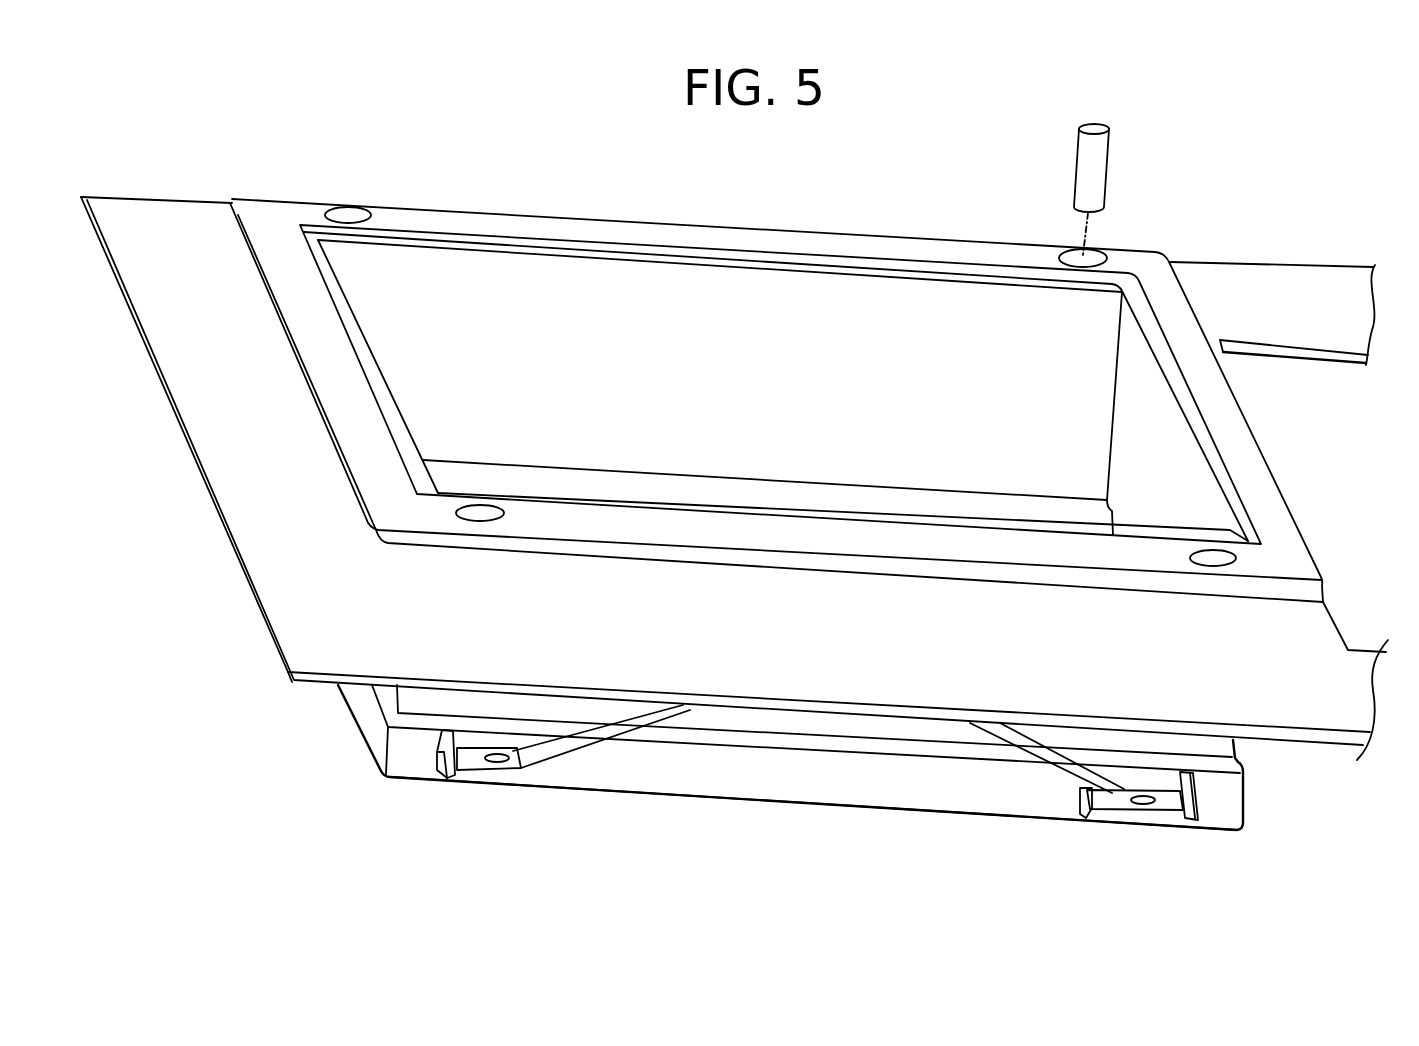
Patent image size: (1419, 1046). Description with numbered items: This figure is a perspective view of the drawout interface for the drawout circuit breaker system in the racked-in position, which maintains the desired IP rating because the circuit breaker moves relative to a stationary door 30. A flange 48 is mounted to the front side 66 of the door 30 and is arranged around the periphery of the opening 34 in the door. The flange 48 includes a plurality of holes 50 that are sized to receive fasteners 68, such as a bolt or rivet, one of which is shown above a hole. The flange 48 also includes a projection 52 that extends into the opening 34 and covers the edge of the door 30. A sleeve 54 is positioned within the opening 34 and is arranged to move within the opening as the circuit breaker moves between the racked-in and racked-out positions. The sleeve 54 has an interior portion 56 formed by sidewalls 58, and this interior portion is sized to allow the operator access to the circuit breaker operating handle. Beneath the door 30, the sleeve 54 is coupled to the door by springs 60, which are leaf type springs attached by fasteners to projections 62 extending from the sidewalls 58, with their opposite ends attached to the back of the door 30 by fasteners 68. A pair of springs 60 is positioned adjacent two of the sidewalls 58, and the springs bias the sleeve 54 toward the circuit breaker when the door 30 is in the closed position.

The door 30 is at (218, 252).
The opening 34 is at (837, 318).
The flange 48 is at (603, 230).
The holes 50 is at (343, 220).
The projection 52 is at (443, 240).
The sleeve 54 is at (398, 782).
The interior portion 56 is at (975, 408).
The sidewalls 58 is at (759, 386).
The springs 60 is at (580, 735).
The projections 62 is at (460, 772).
The front side 66 is at (1245, 688).
The fasteners 68 is at (1105, 192).